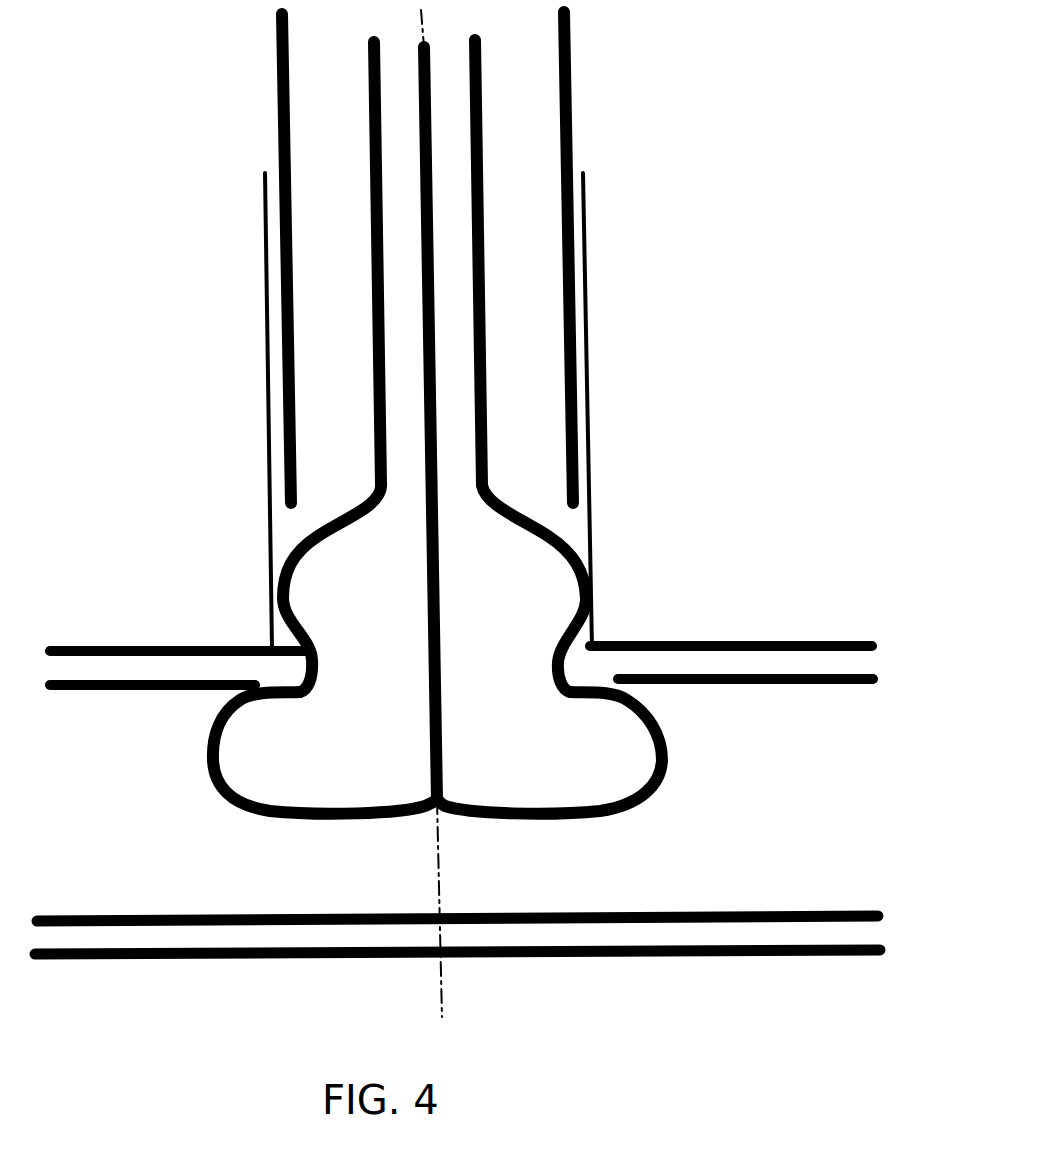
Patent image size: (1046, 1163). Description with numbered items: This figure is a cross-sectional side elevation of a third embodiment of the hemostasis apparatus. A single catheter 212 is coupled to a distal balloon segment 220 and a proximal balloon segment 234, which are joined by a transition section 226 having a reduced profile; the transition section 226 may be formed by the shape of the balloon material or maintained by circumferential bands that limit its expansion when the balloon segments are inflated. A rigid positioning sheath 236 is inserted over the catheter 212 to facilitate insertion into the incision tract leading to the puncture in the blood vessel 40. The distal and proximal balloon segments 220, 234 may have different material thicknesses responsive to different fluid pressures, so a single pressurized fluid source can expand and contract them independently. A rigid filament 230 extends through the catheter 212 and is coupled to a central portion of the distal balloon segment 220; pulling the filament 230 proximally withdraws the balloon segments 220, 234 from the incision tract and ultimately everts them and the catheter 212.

The catheter 212 is at (452, 199).
The distal balloon segment 220 is at (635, 772).
The transition section 226 is at (577, 660).
The rigid filament 230 is at (427, 392).
The proximal balloon segment 234 is at (562, 577).
The rigid positioning sheath 236 is at (280, 264).
The blood vessel 40 is at (113, 948).